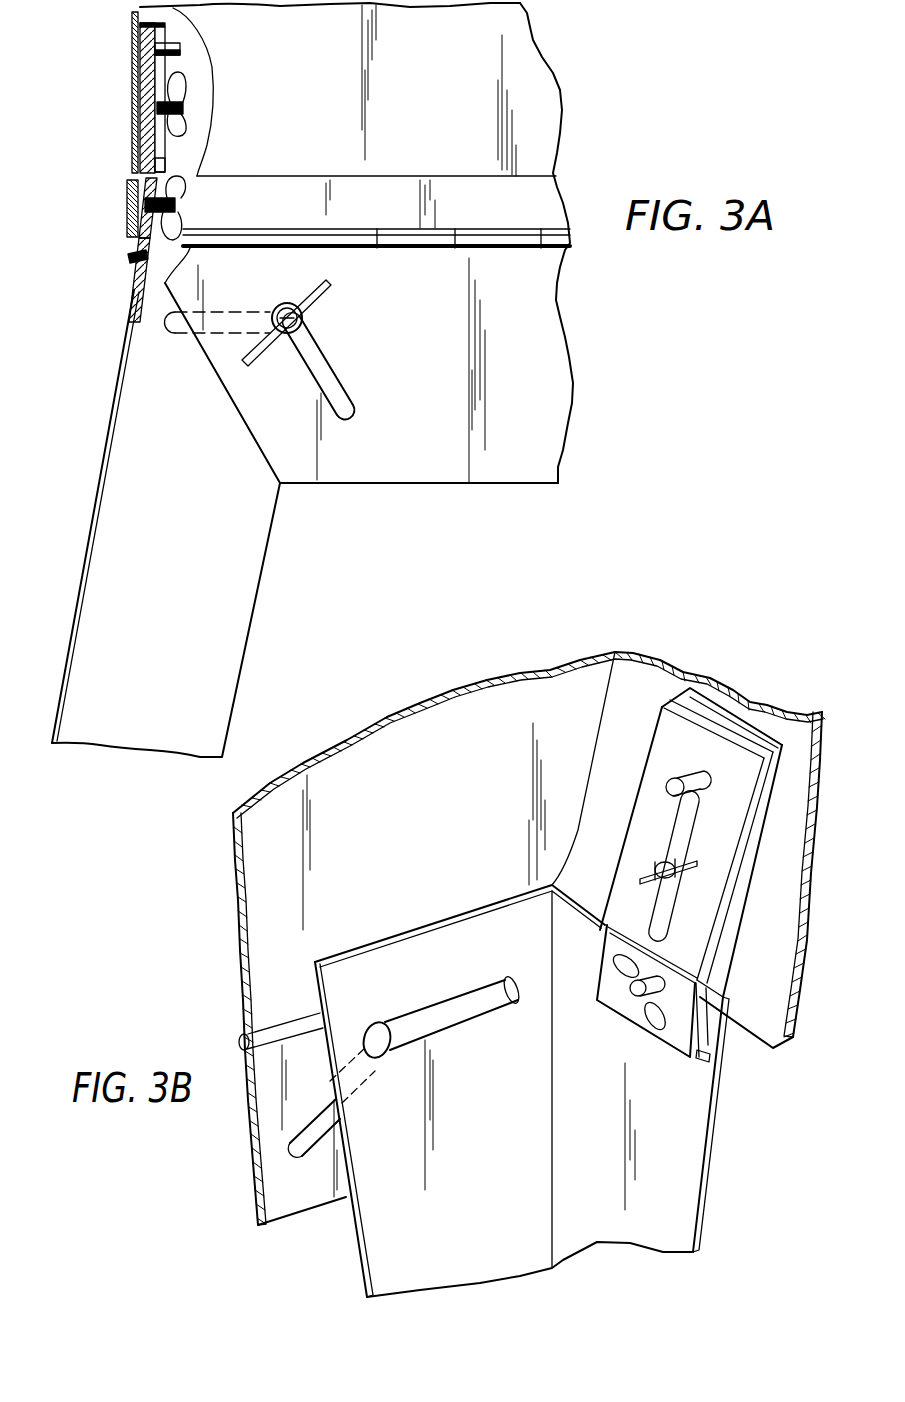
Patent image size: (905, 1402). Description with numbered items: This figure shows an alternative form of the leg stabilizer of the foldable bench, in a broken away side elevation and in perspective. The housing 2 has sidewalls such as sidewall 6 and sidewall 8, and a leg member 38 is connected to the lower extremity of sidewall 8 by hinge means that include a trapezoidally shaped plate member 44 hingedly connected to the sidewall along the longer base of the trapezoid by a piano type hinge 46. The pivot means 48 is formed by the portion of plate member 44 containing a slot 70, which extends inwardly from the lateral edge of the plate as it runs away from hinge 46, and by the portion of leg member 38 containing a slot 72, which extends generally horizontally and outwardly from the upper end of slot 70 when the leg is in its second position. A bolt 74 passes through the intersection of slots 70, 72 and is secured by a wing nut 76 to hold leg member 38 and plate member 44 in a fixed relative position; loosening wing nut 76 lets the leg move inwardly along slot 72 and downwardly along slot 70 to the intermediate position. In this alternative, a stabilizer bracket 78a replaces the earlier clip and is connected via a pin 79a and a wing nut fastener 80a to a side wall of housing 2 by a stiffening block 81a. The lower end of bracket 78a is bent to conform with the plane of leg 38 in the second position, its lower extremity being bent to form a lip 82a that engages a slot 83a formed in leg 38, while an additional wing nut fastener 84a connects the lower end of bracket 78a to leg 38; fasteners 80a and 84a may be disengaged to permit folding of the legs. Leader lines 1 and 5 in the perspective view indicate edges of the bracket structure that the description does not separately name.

In FIG. 3B, the plate bend edge 1 is at (733, 855).
In FIG. 3A, the housing 2 is at (133, 23).
In FIG. 3B, the flange 5 is at (730, 920).
In FIG. 3B, the sidewall 6 is at (700, 1020).
In FIG. 3B, the sidewall 8 is at (702, 1100).
In FIG. 3A, the leg member 38 is at (92, 523).
In FIG. 3A, the plate member 44 is at (440, 422).
In FIG. 3B, the plate member 44 is at (325, 1203).
In FIG. 3A, the piano type hinge 46 is at (132, 278).
In FIG. 3A, the pivot means 48 is at (278, 357).
In FIG. 3A, the slot 70 is at (330, 365).
In FIG. 3B, the slot 70 is at (290, 1150).
In FIG. 3A, the slot 72 is at (174, 336).
In FIG. 3B, the slot 72 is at (507, 1003).
In FIG. 3A, the bolt 74 is at (287, 303).
In FIG. 3B, the bolt 74 is at (383, 1050).
In FIG. 3A, the wing nut 76 is at (118, 152).
In FIG. 3A, the stabilizer bracket 78a is at (180, 157).
In FIG. 3B, the stabilizer bracket 78a is at (755, 779).
In FIG. 3A, the pin 79a is at (178, 48).
In FIG. 3B, the pin 79a is at (666, 786).
In FIG. 3A, the wing nut fastener 80a is at (182, 105).
In FIG. 3B, the wing nut fastener 80a is at (647, 877).
In FIG. 3A, the stiffening block 81a is at (147, 78).
In FIG. 3B, the stiffening block 81a is at (753, 735).
In FIG. 3A, the lip 82a is at (130, 258).
In FIG. 3A, the slot 83a is at (128, 258).
In FIG. 3B, the slot 83a is at (703, 1060).
In FIG. 3A, the wing nut fastener 84a is at (182, 200).
In FIG. 3B, the wing nut fastener 84a is at (645, 1030).